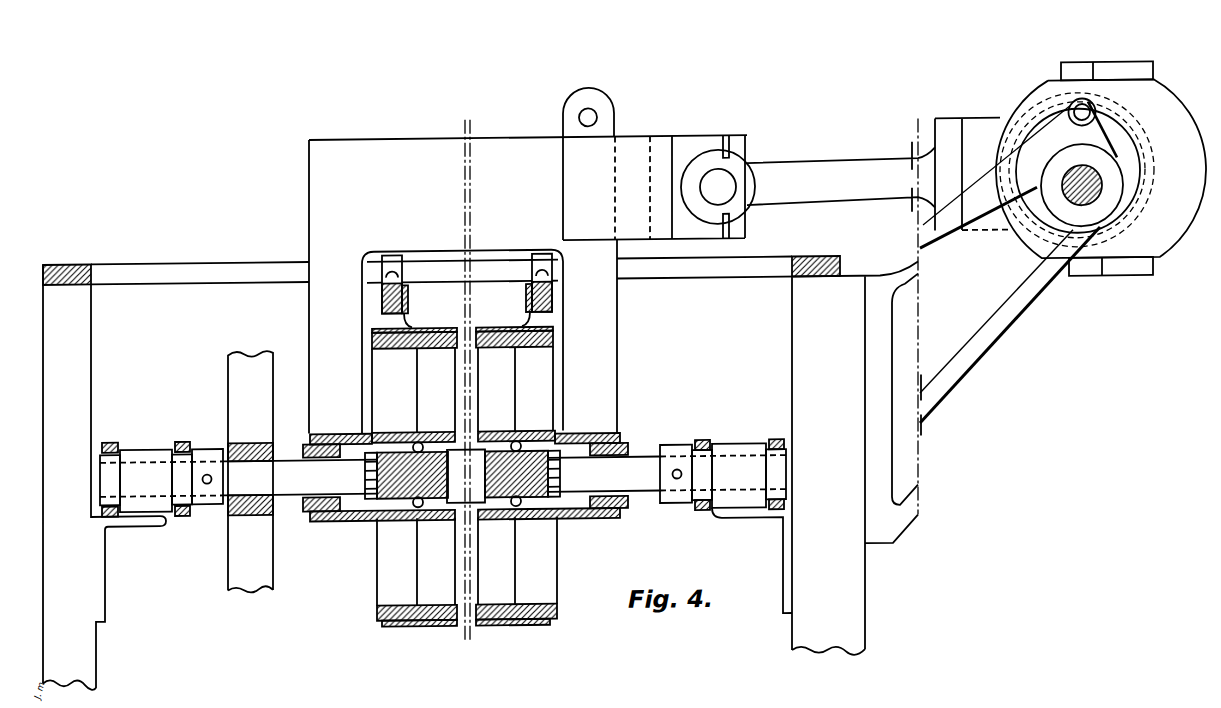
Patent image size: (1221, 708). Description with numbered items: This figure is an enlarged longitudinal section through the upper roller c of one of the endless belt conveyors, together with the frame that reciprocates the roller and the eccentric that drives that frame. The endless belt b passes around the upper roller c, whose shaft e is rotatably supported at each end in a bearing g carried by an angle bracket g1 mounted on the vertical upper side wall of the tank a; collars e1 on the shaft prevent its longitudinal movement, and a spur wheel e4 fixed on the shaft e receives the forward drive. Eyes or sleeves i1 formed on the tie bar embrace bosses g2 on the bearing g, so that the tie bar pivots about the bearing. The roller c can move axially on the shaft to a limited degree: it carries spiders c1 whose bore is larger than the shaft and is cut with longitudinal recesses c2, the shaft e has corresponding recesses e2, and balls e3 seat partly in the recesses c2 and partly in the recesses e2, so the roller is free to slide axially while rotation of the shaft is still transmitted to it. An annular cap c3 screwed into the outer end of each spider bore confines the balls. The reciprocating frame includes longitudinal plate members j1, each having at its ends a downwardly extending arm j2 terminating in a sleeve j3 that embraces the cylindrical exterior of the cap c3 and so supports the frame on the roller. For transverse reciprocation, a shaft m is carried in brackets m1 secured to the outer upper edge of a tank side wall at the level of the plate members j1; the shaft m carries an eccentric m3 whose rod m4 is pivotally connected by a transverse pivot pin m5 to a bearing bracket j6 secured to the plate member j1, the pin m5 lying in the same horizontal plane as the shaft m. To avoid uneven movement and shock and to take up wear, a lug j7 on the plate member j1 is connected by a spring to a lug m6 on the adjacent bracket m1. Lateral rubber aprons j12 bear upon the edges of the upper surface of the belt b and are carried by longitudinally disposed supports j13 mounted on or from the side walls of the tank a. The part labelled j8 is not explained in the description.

The tank a is at (73, 347).
The spur wheel e4 is at (248, 375).
The eye or sleeve i1 is at (175, 447).
The boss g2 is at (187, 475).
The bearing g is at (737, 511).
The angle bracket g1 is at (747, 523).
The collar e1 is at (208, 503).
The longitudinal plate member j1 is at (508, 151).
The downwardly extending arm j2 is at (330, 296).
The longitudinally disposed bar or support j13 is at (400, 271).
The lateral apron of rubber j12 is at (407, 326).
The spider c1 is at (398, 385).
The longitudinal recess c2 is at (433, 452).
The cap c3 is at (617, 449).
The sleeve j3 is at (328, 521).
The plate j8 is at (368, 519).
The shaft recess e2 is at (407, 454).
The ball e3 is at (503, 524).
The shaft e is at (457, 502).
The endless belt b is at (433, 628).
The upper roller c is at (503, 631).
The lug j7 is at (600, 130).
The bearing bracket j6 is at (655, 232).
The pivot pin m5 is at (718, 195).
The eccentric rod m4 is at (843, 180).
The lug m6 is at (1071, 128).
The shaft m is at (1065, 209).
The eccentric m3 is at (1125, 215).
The bracket m1 is at (1010, 324).